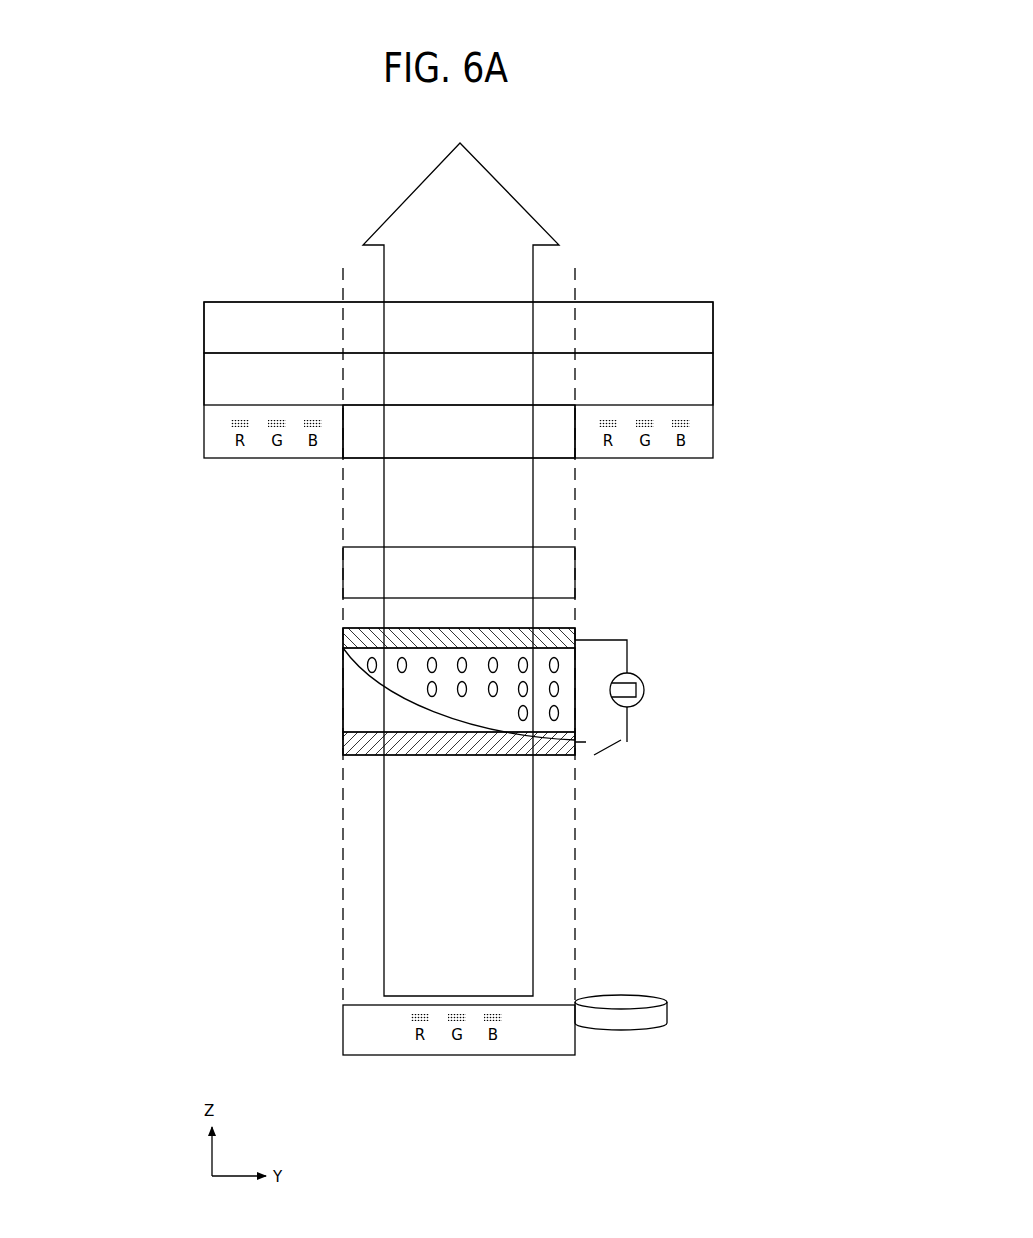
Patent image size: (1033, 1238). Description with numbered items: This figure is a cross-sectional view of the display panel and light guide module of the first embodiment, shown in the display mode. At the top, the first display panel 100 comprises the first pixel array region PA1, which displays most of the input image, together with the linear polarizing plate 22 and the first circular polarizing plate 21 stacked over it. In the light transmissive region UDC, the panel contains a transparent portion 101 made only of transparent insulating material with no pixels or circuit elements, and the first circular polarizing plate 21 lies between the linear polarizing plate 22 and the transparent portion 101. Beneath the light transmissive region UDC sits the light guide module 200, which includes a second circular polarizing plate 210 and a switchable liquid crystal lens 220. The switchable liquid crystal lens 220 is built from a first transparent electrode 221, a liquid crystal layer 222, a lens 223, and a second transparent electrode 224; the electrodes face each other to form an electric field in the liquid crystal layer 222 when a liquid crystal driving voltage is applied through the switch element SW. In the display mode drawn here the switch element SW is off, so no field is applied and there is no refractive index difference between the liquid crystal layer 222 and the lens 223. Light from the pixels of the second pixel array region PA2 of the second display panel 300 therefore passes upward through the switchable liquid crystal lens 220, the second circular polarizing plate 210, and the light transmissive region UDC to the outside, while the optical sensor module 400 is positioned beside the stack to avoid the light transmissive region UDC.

The first display panel 100 is at (448, 380).
The linear polarizing plate 22 is at (713, 323).
The first circular polarizing plate 21 is at (713, 378).
The transparent portion 101 is at (548, 452).
The light guide module 200 is at (483, 661).
The second circular polarizing plate 210 is at (343, 575).
The switchable liquid crystal lens 220 is at (515, 693).
The first transparent electrode 221 is at (343, 634).
The liquid crystal layer 222 is at (343, 660).
The lens 223 is at (343, 700).
The second transparent electrode 224 is at (343, 742).
The second display panel 300 is at (343, 1031).
The optical sensor module 400 is at (667, 1012).
The first pixel array region PA1 is at (258, 455).
The second pixel array region PA2 is at (538, 1047).
The switch element SW is at (602, 757).
The light transmissive region UDC is at (343, 278).